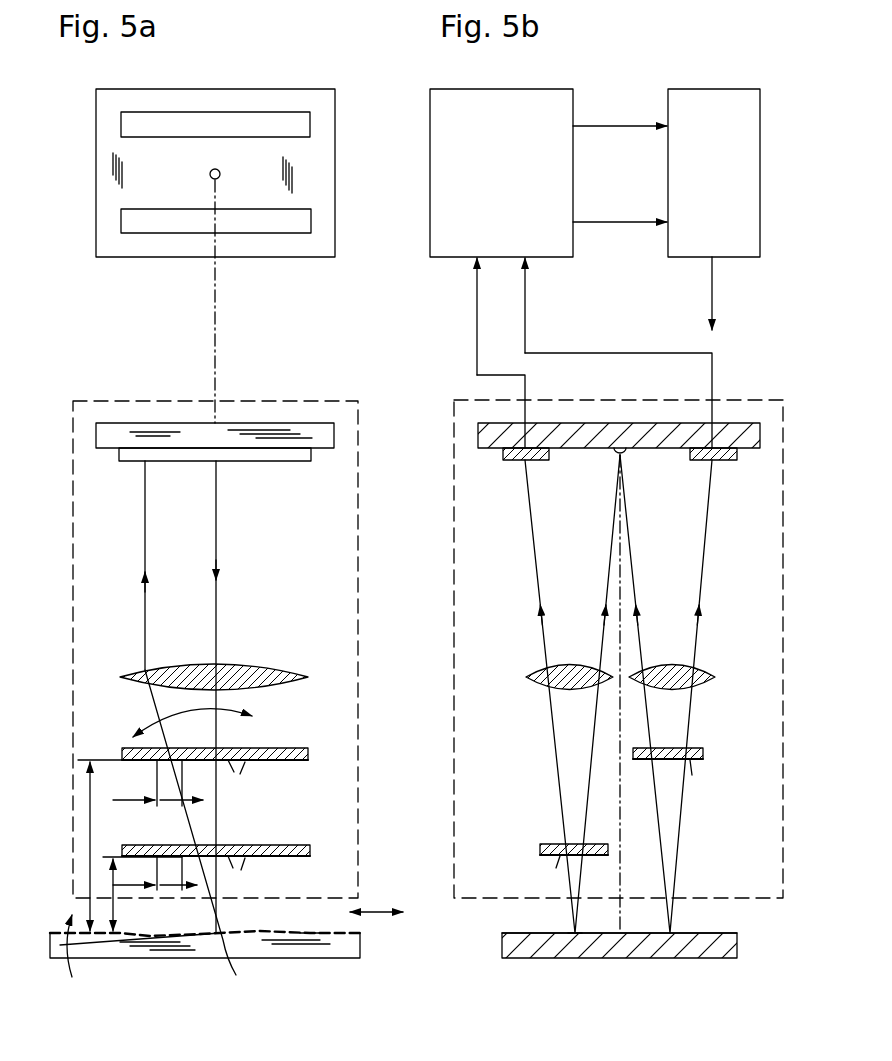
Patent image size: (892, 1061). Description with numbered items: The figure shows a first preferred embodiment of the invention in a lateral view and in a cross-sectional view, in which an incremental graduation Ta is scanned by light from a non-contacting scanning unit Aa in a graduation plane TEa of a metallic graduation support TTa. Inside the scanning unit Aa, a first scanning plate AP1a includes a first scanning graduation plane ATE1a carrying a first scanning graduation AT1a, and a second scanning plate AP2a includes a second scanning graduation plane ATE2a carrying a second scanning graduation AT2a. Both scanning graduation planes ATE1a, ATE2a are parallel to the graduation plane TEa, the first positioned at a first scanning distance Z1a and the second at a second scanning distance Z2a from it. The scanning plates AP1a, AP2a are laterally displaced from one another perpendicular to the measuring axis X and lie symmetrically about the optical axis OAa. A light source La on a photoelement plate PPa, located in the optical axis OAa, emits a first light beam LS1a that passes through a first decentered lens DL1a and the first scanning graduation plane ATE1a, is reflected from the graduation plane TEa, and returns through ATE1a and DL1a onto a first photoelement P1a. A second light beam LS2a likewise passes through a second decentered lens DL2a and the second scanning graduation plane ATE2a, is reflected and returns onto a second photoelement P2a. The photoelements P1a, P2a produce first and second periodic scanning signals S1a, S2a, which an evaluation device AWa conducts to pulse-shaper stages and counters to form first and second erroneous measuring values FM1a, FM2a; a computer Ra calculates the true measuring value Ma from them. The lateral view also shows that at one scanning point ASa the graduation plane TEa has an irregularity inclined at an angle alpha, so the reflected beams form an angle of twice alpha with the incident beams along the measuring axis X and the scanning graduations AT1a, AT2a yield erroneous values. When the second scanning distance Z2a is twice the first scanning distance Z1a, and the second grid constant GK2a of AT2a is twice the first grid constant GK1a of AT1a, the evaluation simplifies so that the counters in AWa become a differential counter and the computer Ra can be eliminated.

In FIG. 5a, the photoelement plate PPa is at (176, 240).
In FIG. 5b, the photoelement plate PPa is at (478, 434).
In FIG. 5a, the first photoelement P1a is at (135, 220).
In FIG. 5b, the first photoelement P1a is at (512, 460).
In FIG. 5a, the second photoelement P2a is at (130, 122).
In FIG. 5b, the second photoelement P2a is at (730, 462).
In FIG. 5a, the light source La is at (210, 174).
In FIG. 5b, the light source La is at (627, 455).
In FIG. 5a, the optical axis OAa is at (218, 397).
In FIG. 5b, the optical axis OAa is at (620, 720).
In FIG. 5a, the scanning unit Aa is at (452, 511).
In FIG. 5b, the first light beam LS1a is at (604, 590).
In FIG. 5a, the second light beam LS2a is at (175, 552).
In FIG. 5b, the second light beam LS2a is at (698, 590).
In FIG. 5b, the first decentered lens DL1a is at (537, 687).
In FIG. 5a, the second decentered lens DL2a is at (280, 671).
In FIG. 5b, the second decentered lens DL2a is at (705, 668).
In FIG. 5a, the first scanning plate AP1a is at (305, 836).
In FIG. 5b, the first scanning plate AP1a is at (545, 843).
In FIG. 5a, the second scanning plate AP2a is at (301, 746).
In FIG. 5b, the second scanning plate AP2a is at (698, 748).
In FIG. 5a, the first scanning graduation plane ATE1a is at (310, 858).
In FIG. 5b, the first scanning graduation plane ATE1a is at (540, 850).
In FIG. 5a, the second scanning graduation plane ATE2a is at (308, 760).
In FIG. 5b, the second scanning graduation plane ATE2a is at (703, 759).
In FIG. 5a, the first scanning graduation AT1a is at (258, 876).
In FIG. 5b, the first scanning graduation AT1a is at (556, 868).
In FIG. 5a, the second scanning graduation AT2a is at (255, 781).
In FIG. 5b, the second scanning graduation AT2a is at (692, 775).
In FIG. 5a, the first grid constant GK1a is at (155, 873).
In FIG. 5a, the second grid constant GK2a is at (150, 783).
In FIG. 5a, the first scanning distance Z1a is at (136, 891).
In FIG. 5a, the second scanning distance Z2a is at (112, 845).
In FIG. 5a, the measuring axis X is at (376, 898).
In FIG. 5a, the incremental graduation Ta is at (311, 933).
In FIG. 5b, the incremental graduation Ta is at (562, 931).
In FIG. 5a, the graduation plane TEa is at (360, 933).
In FIG. 5b, the graduation plane TEa is at (728, 932).
In FIG. 5a, the graduation support TTa is at (307, 950).
In FIG. 5b, the graduation support TTa is at (668, 948).
In FIG. 5a, the scanning point ASa is at (200, 836).
In FIG. 5b, the evaluation device AWa is at (447, 180).
In FIG. 5b, the computer Ra is at (721, 108).
In FIG. 5b, the first erroneous measuring value FM1a is at (620, 228).
In FIG. 5b, the second erroneous measuring value FM2a is at (622, 126).
In FIG. 5b, the first periodic scanning signal S1a is at (477, 320).
In FIG. 5b, the second periodic scanning signal S2a is at (527, 320).
In FIG. 5b, the true measuring value Ma is at (712, 297).